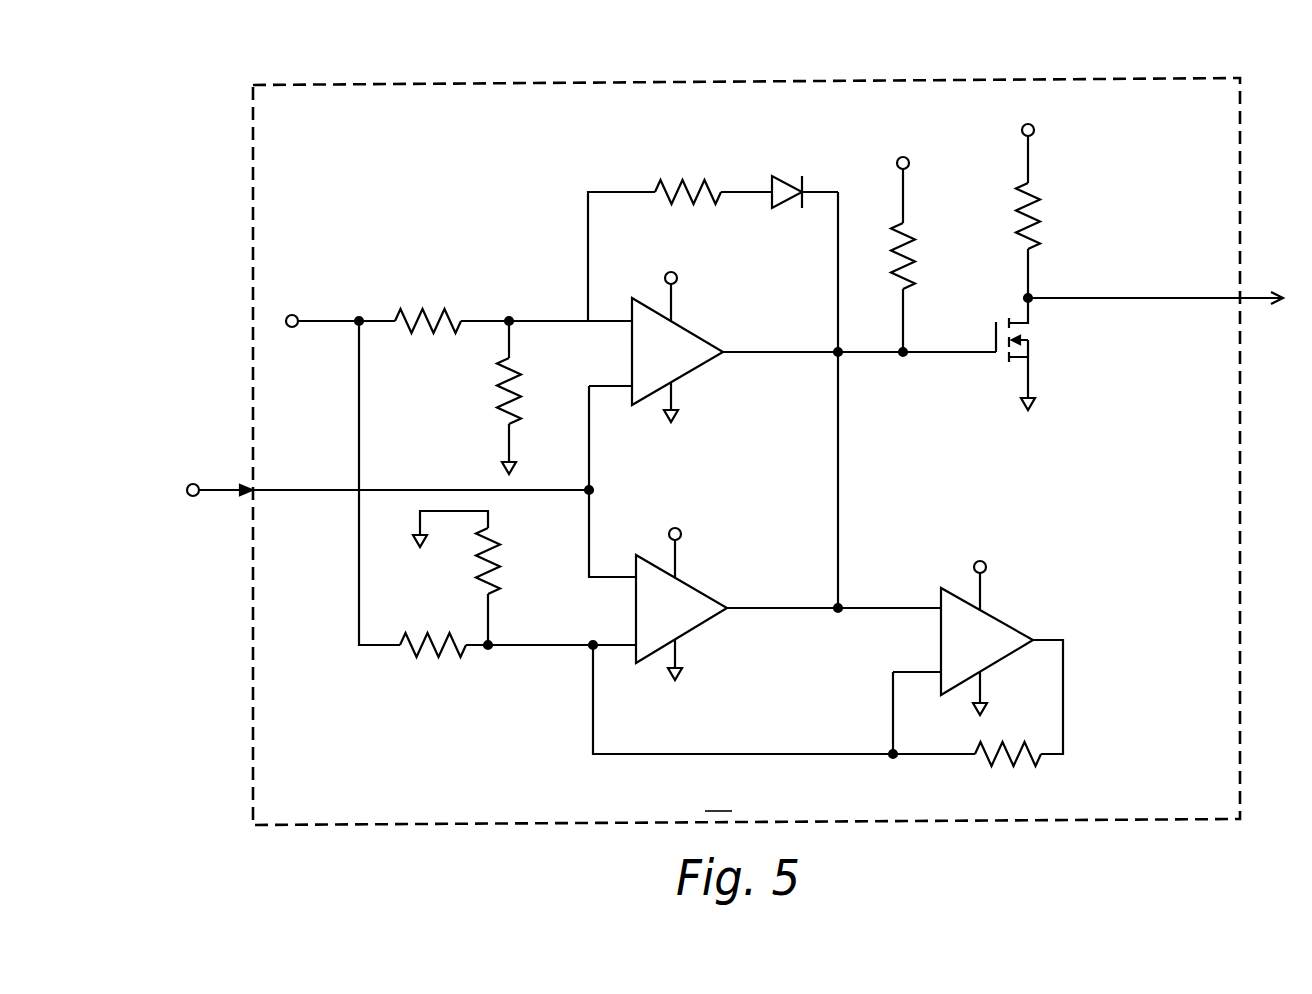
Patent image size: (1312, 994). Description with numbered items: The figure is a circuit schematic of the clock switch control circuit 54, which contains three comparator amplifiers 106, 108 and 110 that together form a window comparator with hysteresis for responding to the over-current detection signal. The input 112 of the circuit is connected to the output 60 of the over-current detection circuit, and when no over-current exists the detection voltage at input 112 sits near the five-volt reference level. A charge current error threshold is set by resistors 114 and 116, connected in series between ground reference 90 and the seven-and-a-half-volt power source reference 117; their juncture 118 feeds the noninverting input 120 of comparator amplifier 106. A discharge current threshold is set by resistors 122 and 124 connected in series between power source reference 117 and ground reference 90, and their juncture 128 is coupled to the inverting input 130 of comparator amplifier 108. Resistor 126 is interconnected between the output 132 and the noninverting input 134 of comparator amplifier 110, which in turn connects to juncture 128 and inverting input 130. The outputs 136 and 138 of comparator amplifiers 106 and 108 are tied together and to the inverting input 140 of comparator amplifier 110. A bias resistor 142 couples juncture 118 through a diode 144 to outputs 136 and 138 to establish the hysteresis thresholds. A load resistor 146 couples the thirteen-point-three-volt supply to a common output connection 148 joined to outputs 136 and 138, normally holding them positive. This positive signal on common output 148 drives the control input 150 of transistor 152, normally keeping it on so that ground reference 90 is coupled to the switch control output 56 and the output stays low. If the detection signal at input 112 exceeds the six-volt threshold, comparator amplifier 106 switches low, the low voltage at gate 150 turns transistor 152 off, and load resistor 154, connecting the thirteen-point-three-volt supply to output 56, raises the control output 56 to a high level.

The clock switch control circuit 54 is at (1168, 98).
The switch control output 56 is at (1262, 295).
The output of the over-current detection circuit 60 is at (196, 482).
The ground reference 90 is at (515, 468).
The comparator amplifier 106 is at (690, 380).
The comparator amplifier 108 is at (695, 605).
The comparator amplifier 110 is at (990, 662).
The input 112 is at (247, 496).
The resistor 114 is at (440, 310).
The resistor 116 is at (498, 398).
The power source reference 117 is at (293, 313).
The juncture 118 is at (507, 316).
The noninverting input 120 is at (630, 316).
The resistor 122 is at (500, 586).
The resistor 124 is at (417, 655).
The resistor 126 is at (1008, 764).
The juncture 128 is at (492, 650).
The inverting input 130 is at (630, 642).
The output 132 is at (1034, 638).
The noninverting input 134 is at (940, 668).
The output 136 is at (836, 356).
The output 138 is at (843, 604).
The inverting input 140 is at (940, 598).
The bias resistor 142 is at (682, 180).
The diode 144 is at (788, 180).
The load resistor 146 is at (916, 250).
The common output connection 148 is at (860, 348).
The control input 150 is at (988, 348).
The transistor 152 is at (1034, 348).
The load resistor 154 is at (1040, 212).